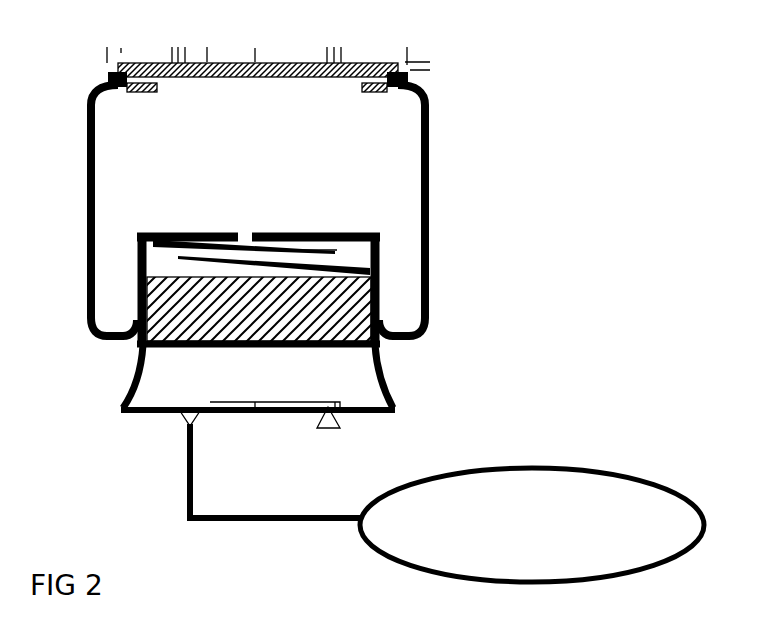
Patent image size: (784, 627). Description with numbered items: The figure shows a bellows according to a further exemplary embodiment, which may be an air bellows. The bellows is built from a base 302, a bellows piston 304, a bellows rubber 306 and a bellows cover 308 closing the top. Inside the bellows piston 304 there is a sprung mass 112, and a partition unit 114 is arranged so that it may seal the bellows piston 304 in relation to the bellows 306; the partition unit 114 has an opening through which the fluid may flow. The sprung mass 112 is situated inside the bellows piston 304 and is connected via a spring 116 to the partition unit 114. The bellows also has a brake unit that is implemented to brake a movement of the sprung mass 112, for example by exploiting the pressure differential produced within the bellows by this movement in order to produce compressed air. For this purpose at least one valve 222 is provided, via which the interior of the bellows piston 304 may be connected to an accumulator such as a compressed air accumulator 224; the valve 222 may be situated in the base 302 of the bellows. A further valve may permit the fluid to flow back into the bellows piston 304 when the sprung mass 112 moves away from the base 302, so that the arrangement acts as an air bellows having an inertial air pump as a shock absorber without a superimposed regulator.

The bellows cover 308 is at (368, 60).
The bellows rubber 306 is at (430, 200).
The bellows piston 304 is at (381, 363).
The sprung mass 112 is at (307, 345).
The partition unit 114 is at (297, 233).
The spring 116 is at (337, 253).
The base 302 is at (368, 416).
The valve 222 is at (182, 418).
The compressed air accumulator 224 is at (520, 468).